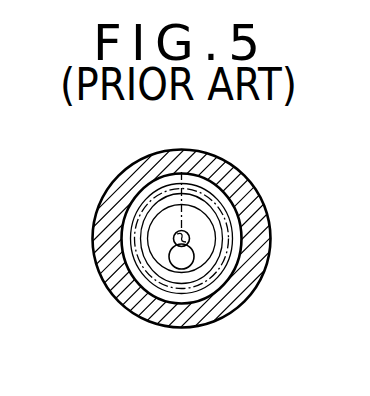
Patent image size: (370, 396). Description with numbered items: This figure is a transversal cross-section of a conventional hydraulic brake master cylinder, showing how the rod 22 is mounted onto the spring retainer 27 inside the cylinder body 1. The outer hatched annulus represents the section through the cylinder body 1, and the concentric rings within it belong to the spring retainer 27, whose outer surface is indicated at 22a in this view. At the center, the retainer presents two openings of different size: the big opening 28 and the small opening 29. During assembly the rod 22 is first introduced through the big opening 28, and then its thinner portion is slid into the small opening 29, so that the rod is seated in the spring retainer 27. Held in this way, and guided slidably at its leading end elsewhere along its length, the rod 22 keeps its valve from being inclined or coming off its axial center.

The cylinder body 1 is at (266, 259).
The rod 22 is at (172, 243).
The bushing outer surface 22a is at (166, 168).
The spring retainer 27 is at (188, 268).
The big opening 28 is at (176, 264).
The small opening 29 is at (191, 230).